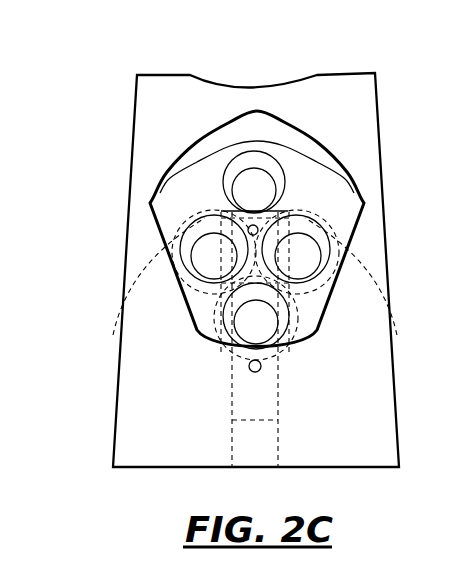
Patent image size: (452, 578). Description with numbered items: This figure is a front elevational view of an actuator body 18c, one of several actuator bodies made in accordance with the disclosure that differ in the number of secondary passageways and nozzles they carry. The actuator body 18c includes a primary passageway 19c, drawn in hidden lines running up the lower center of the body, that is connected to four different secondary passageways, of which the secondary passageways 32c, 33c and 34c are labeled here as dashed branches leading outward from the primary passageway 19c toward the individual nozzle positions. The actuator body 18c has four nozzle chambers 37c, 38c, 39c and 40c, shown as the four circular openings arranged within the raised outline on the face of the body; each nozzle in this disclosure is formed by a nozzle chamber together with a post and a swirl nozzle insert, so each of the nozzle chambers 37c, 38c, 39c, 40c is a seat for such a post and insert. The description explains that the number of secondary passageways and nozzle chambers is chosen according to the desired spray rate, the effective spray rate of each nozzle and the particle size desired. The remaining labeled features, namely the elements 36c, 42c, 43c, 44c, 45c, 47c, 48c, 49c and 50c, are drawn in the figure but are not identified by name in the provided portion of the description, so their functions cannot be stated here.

The actuator body 18c is at (168, 61).
The primary passageway 19c is at (233, 384).
The secondary passageway 32c is at (305, 258).
The secondary passageway 33c is at (250, 228).
The secondary passageway 34c is at (207, 283).
The inner arcuate wall 36c is at (200, 178).
The nozzle chamber 37c is at (236, 310).
The nozzle chamber 38c is at (323, 246).
The nozzle chamber 39c is at (247, 163).
The nozzle chamber 40c is at (192, 241).
The lower aperture 42c is at (262, 366).
The hidden passage 43c is at (275, 235).
The hidden passage 44c is at (253, 225).
The left nozzle seat 45c is at (185, 275).
The lower nozzle 47c is at (260, 318).
The right nozzle seat 48c is at (310, 275).
The upper nozzle opening 49c is at (258, 183).
The left nozzle opening 50c is at (205, 258).